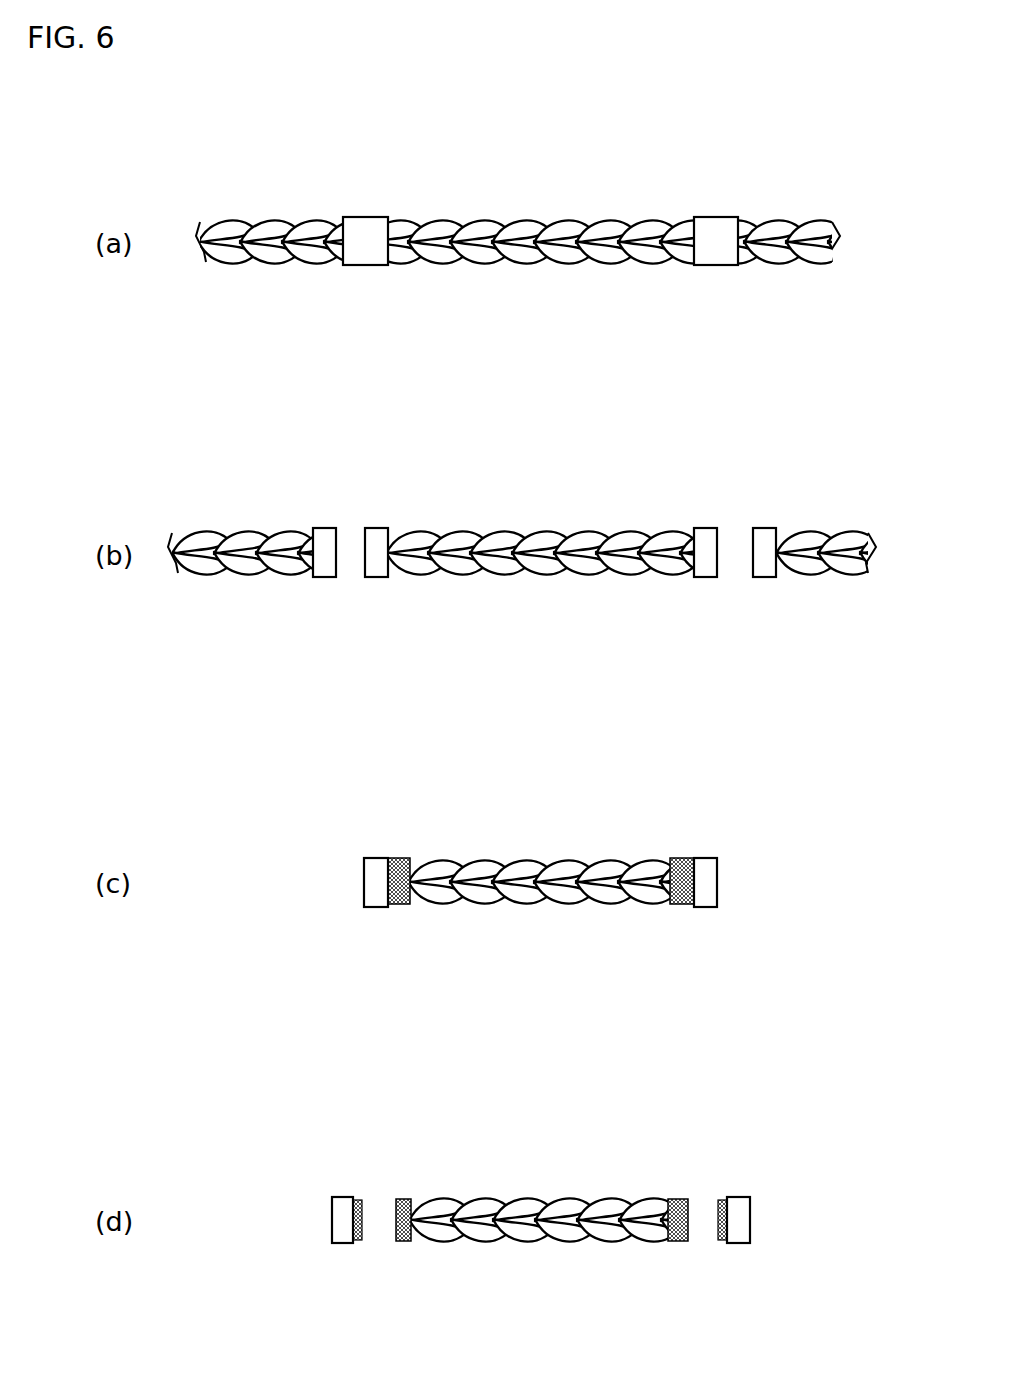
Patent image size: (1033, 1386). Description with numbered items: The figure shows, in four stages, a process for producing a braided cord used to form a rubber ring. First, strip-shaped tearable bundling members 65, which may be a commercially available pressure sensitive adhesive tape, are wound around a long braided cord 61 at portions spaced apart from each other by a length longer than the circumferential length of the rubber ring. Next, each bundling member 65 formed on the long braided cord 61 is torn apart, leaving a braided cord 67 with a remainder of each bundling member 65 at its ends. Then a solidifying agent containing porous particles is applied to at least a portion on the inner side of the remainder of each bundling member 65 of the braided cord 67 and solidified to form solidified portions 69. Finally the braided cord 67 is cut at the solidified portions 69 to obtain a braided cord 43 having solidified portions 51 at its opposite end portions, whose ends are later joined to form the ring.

The long braided cord 61 is at (534, 222).
The bundling member 65 is at (366, 217).
The braided cord 67 is at (538, 530).
The solidified portion 69 is at (400, 858).
The solidified portion 51 is at (403, 1198).
The braided cord 43 is at (538, 1200).